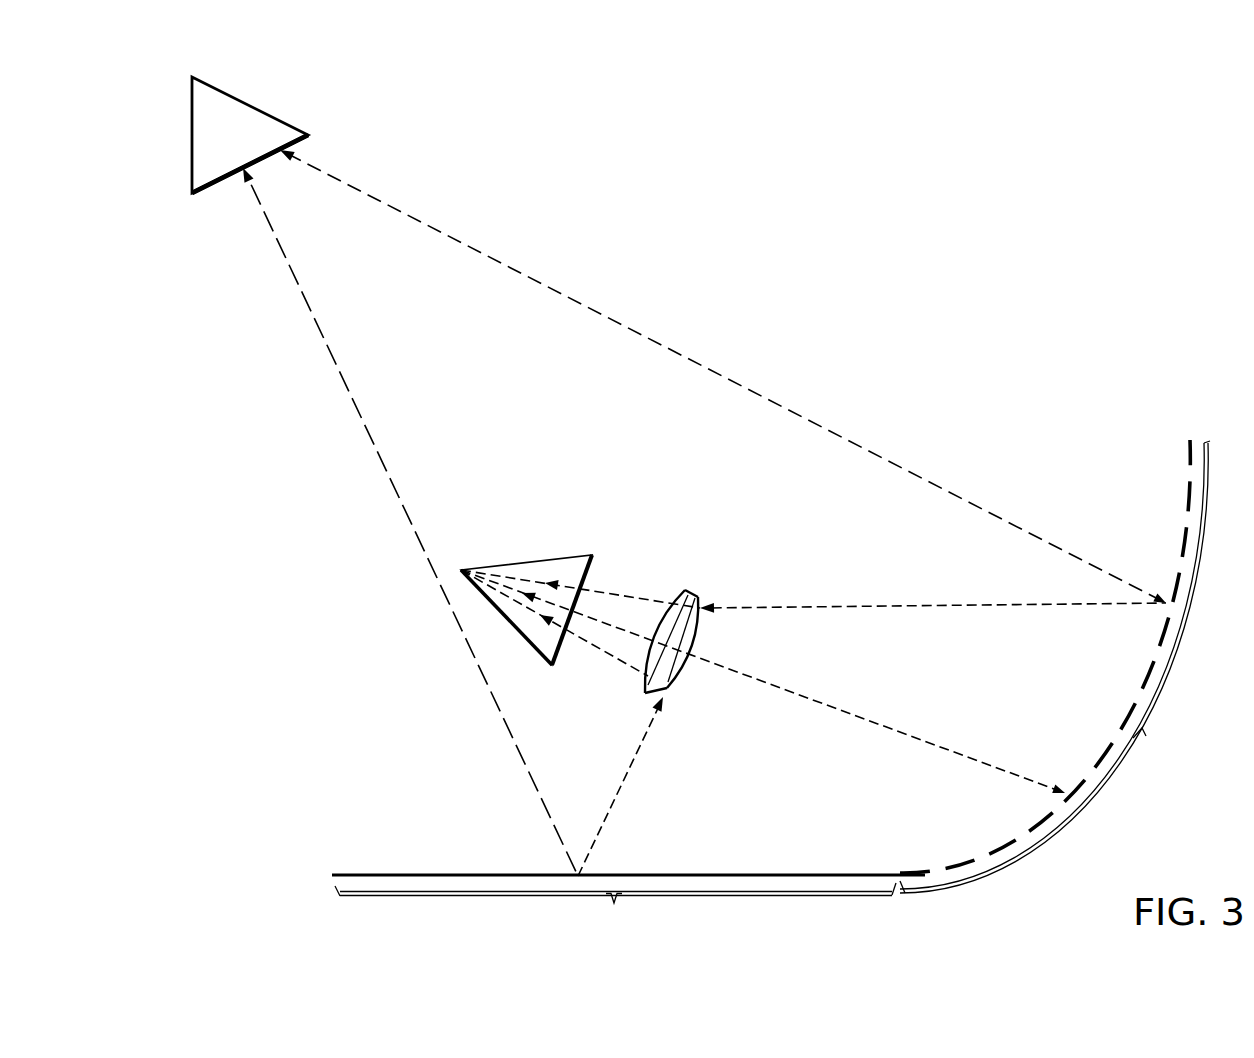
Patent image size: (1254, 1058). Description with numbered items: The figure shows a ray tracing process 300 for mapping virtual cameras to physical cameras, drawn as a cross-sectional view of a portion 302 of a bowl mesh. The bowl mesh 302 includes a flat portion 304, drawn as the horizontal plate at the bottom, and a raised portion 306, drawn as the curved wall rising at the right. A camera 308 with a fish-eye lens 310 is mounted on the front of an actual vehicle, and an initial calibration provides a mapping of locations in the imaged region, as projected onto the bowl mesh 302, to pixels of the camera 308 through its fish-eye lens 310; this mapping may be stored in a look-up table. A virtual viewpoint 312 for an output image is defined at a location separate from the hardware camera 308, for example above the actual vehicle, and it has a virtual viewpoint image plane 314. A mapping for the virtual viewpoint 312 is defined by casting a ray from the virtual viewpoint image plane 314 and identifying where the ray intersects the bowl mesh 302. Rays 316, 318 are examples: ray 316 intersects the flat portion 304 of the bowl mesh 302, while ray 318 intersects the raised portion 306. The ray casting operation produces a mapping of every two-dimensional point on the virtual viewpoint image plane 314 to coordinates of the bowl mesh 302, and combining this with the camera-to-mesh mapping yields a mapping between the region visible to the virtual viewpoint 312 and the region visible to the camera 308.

The ray tracing process 300 is at (900, 82).
The bowl mesh portion 302 is at (463, 875).
The flat portion 304 is at (615, 918).
The raised portion 306 is at (1144, 734).
The camera 308 is at (530, 563).
The fish-eye lens 310 is at (676, 676).
The virtual viewpoint 312 is at (250, 103).
The virtual viewpoint image plane 314 is at (310, 150).
The ray 316 is at (358, 416).
The ray 318 is at (728, 382).